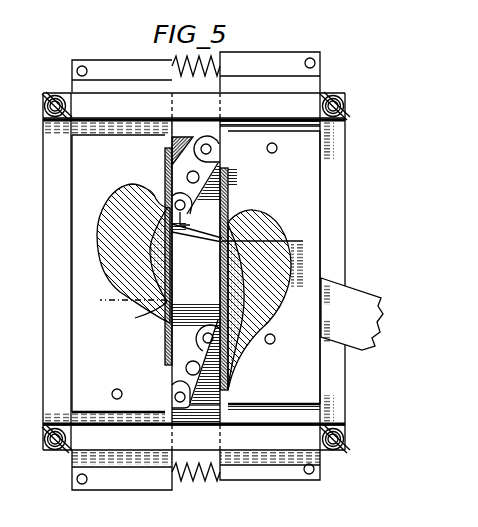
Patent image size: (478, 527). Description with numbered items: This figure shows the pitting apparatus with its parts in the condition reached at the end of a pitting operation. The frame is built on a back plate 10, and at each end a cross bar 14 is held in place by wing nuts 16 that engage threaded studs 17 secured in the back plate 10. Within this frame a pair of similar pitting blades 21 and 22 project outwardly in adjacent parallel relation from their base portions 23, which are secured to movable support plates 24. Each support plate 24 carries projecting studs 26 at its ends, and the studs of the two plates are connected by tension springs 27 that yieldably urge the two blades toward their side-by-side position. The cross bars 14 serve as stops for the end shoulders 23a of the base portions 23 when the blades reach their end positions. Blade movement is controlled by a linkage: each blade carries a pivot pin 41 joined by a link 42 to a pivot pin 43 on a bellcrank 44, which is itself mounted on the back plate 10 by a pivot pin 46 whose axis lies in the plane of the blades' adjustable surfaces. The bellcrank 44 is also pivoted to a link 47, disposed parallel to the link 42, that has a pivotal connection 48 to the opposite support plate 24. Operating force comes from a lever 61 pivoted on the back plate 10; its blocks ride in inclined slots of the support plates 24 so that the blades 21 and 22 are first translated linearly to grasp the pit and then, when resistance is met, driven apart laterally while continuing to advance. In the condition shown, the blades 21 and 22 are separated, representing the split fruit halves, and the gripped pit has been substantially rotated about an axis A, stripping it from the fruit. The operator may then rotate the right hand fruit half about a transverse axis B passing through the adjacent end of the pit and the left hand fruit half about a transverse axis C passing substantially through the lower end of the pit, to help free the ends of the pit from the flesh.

The back plate 10 is at (336, 203).
The cross bar 14 is at (303, 98).
The wing nut 16 is at (347, 111).
The threaded stud 17 is at (56, 96).
The pitting blade 21 is at (228, 200).
The pitting blade 22 is at (166, 160).
The base portion 23 is at (124, 379).
The end shoulder 23a is at (157, 133).
The support plate 24 is at (128, 478).
The stud 26 is at (80, 65).
The tension spring 27 is at (190, 60).
The pivot pin 41 is at (277, 153).
The link 42 is at (208, 137).
The pivot pin 43 is at (212, 148).
The bellcrank 44 is at (186, 206).
The pivot pin 46 is at (199, 177).
The link 47 is at (197, 225).
The pivotal connection 48 is at (275, 344).
The lever 61 is at (357, 332).
The axis A is at (168, 322).
The transverse axis B is at (224, 243).
The transverse axis C is at (144, 314).